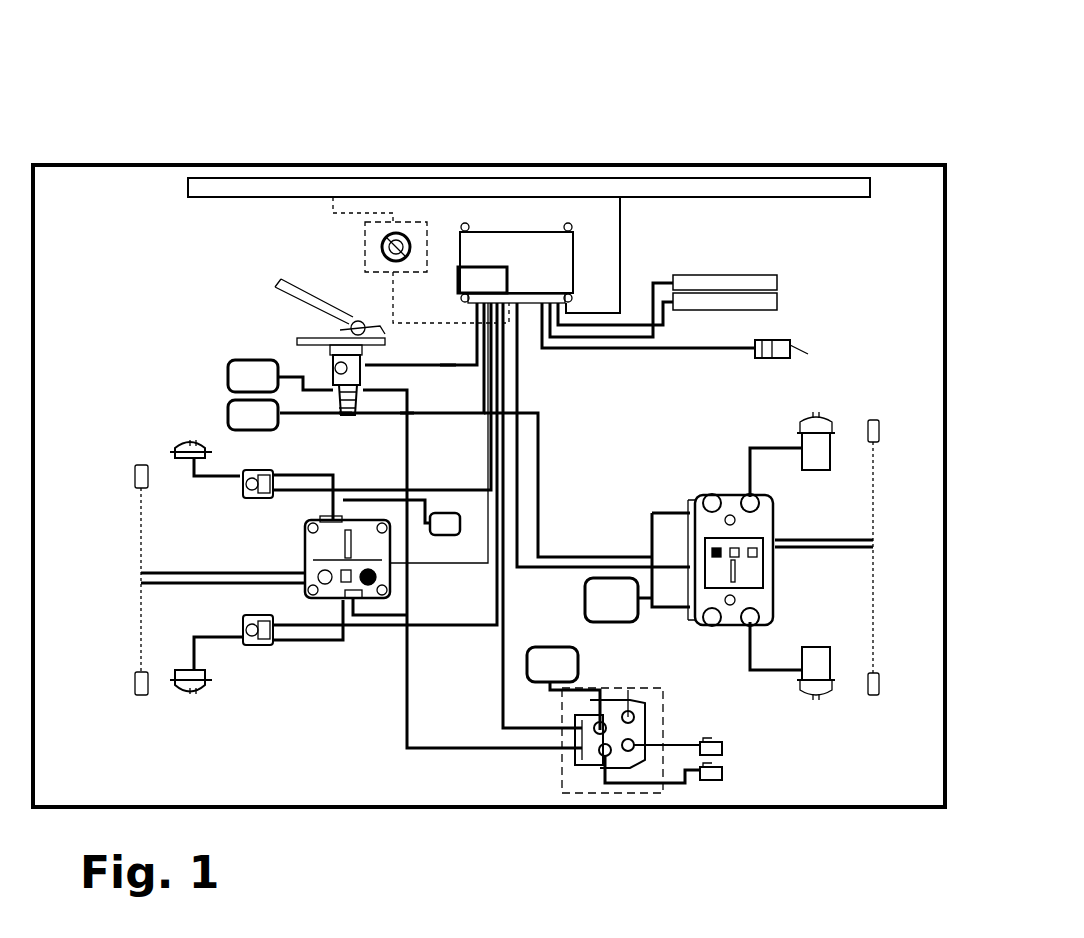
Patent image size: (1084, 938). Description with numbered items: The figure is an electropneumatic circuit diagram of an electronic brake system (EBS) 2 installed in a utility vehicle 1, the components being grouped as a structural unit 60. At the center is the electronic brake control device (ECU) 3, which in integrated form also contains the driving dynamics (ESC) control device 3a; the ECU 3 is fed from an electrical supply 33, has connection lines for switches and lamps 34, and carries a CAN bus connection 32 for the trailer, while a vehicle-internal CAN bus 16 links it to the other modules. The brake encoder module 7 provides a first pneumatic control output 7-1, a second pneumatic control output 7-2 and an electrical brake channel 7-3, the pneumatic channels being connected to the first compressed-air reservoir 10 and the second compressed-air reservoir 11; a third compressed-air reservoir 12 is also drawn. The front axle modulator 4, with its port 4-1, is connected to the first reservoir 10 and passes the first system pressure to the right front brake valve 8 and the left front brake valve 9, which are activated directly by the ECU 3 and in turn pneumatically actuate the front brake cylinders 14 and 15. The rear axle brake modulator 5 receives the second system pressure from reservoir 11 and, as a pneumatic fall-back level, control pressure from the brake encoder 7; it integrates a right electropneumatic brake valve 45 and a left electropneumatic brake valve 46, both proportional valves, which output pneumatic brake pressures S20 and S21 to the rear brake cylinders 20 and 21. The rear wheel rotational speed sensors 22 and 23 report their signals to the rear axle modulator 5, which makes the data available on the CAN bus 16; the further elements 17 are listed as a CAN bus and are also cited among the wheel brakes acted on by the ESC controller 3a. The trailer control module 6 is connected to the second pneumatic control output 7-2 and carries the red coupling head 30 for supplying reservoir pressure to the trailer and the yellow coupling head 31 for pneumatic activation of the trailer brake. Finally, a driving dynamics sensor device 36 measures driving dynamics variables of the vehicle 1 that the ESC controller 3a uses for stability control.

The utility vehicle 1 is at (890, 88).
The electronic brake system 2 is at (92, 163).
The structural unit 60 is at (185, 163).
The electronic brake control device 3 is at (527, 255).
The driving dynamics control device 3a is at (458, 280).
The front axle modulator 4 is at (310, 540).
The outlet port of front axle modulator 4-1 is at (393, 568).
The rear axle brake modulator 5 is at (680, 552).
The trailer control module 6 is at (570, 797).
The brake encoder module 7 is at (342, 325).
The first pneumatic control output 7-1 is at (346, 420).
The second pneumatic control output 7-2 is at (410, 432).
The electrical brake channel 7-3 is at (448, 367).
The right front brake valve 8 is at (243, 490).
The left front brake valve 9 is at (243, 625).
The first compressed-air reservoir 10 is at (228, 372).
The second compressed-air reservoir 11 is at (229, 417).
The third compressed-air reservoir 12 is at (567, 663).
The front brake cylinder 14 is at (182, 447).
The front brake cylinder 15 is at (187, 698).
The CAN bus 16 is at (685, 182).
The CAN bus 17 is at (135, 478).
The rear right brake cylinder 20 is at (830, 430).
The rear left brake cylinder 21 is at (815, 702).
The rear wheel rotational speed sensor 22 is at (878, 425).
The rear wheel rotational speed sensor 23 is at (878, 700).
The red coupling head 30 is at (715, 780).
The yellow coupling head 31 is at (718, 755).
The CAN bus connection for the trailer 32 is at (797, 338).
The electrical supply 33 is at (772, 283).
The switches and lamps 34 is at (778, 301).
The driving dynamics sensor device 36 is at (775, 575).
The right rear electropneumatic brake valve 45 is at (775, 505).
The left rear electropneumatic brake valve 46 is at (775, 625).
The pneumatic brake pressure S20 is at (770, 440).
The pneumatic brake pressure S21 is at (748, 650).